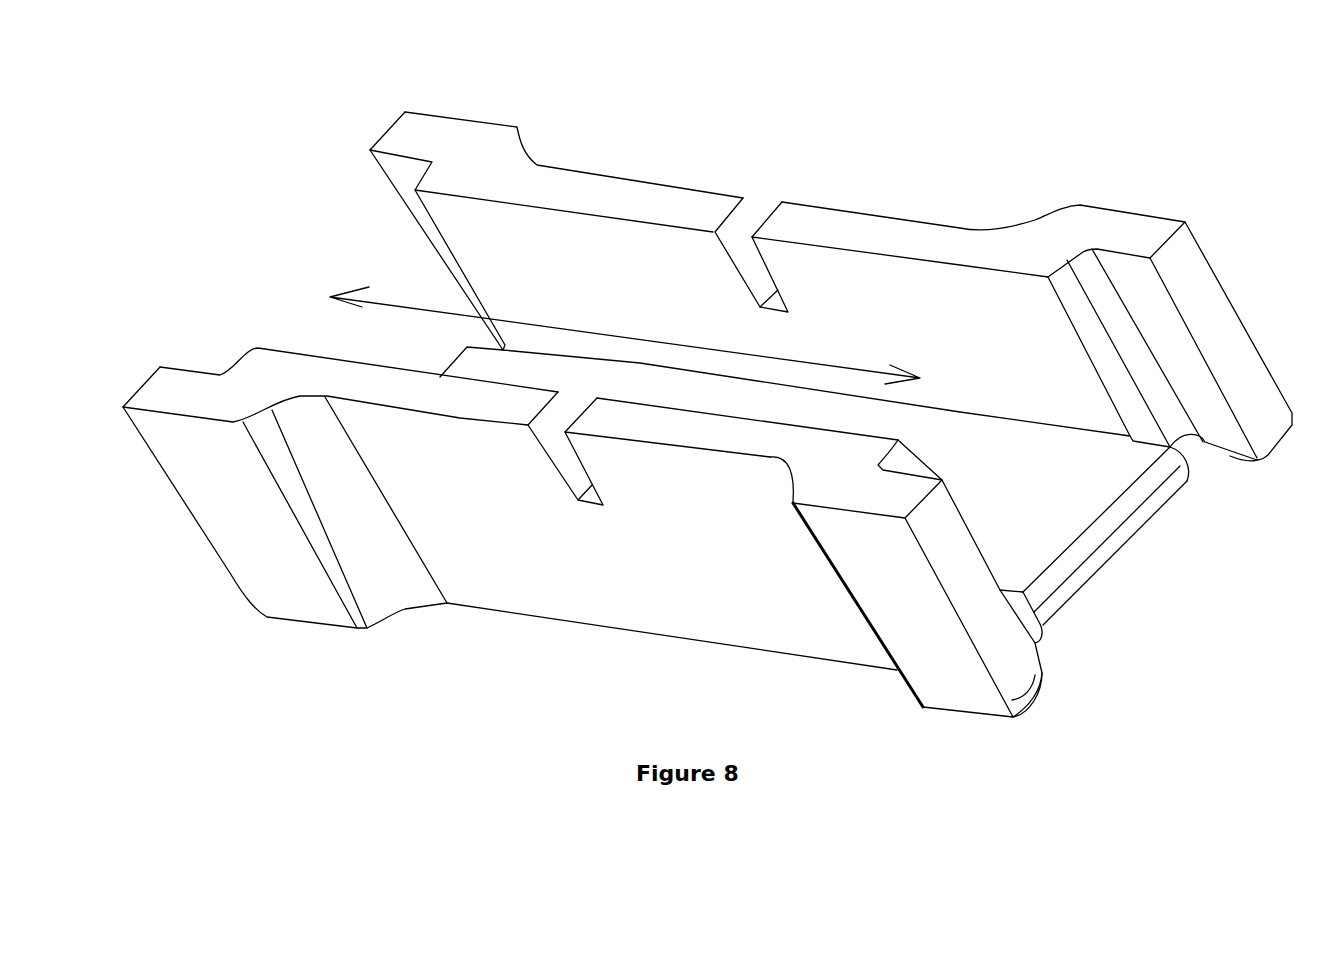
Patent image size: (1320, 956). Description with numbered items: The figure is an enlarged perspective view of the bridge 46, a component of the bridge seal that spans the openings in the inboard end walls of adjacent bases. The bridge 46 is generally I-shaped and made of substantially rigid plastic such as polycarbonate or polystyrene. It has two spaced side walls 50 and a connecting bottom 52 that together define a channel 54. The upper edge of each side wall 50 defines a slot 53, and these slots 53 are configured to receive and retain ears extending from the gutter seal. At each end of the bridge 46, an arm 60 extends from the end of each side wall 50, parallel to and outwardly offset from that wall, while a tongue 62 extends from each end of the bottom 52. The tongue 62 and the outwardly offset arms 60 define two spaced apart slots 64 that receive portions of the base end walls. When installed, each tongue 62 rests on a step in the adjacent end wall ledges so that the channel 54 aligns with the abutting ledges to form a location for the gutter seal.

The bridge 46 is at (509, 622).
The side wall 50 is at (873, 290).
The bottom 52 is at (1046, 508).
The slot 53 is at (760, 210).
The channel 54 is at (403, 303).
The arm 60 is at (427, 133).
The tongue 62 is at (462, 366).
The slot 64 is at (1185, 465).